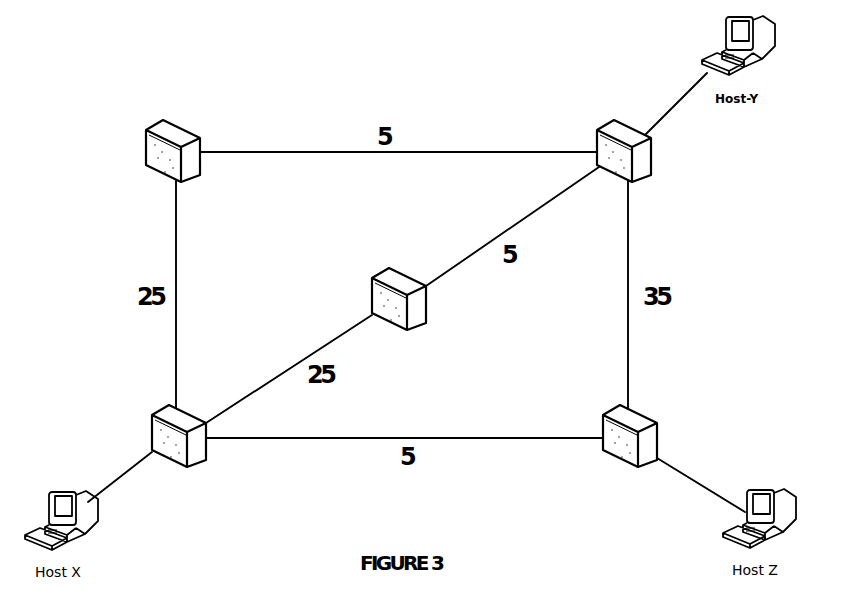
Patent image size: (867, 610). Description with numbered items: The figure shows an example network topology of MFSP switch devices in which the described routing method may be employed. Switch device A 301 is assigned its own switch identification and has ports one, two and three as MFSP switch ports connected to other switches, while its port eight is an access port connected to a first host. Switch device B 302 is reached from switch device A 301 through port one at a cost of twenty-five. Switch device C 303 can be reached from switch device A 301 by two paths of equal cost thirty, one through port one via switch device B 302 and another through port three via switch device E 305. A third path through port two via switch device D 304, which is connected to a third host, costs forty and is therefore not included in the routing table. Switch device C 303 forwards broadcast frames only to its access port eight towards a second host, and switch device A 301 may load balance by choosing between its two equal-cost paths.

The switch device A 301 is at (162, 431).
The switch device B 302 is at (155, 159).
The switch device C 303 is at (639, 158).
The switch device D 304 is at (643, 431).
The switch device E 305 is at (389, 321).